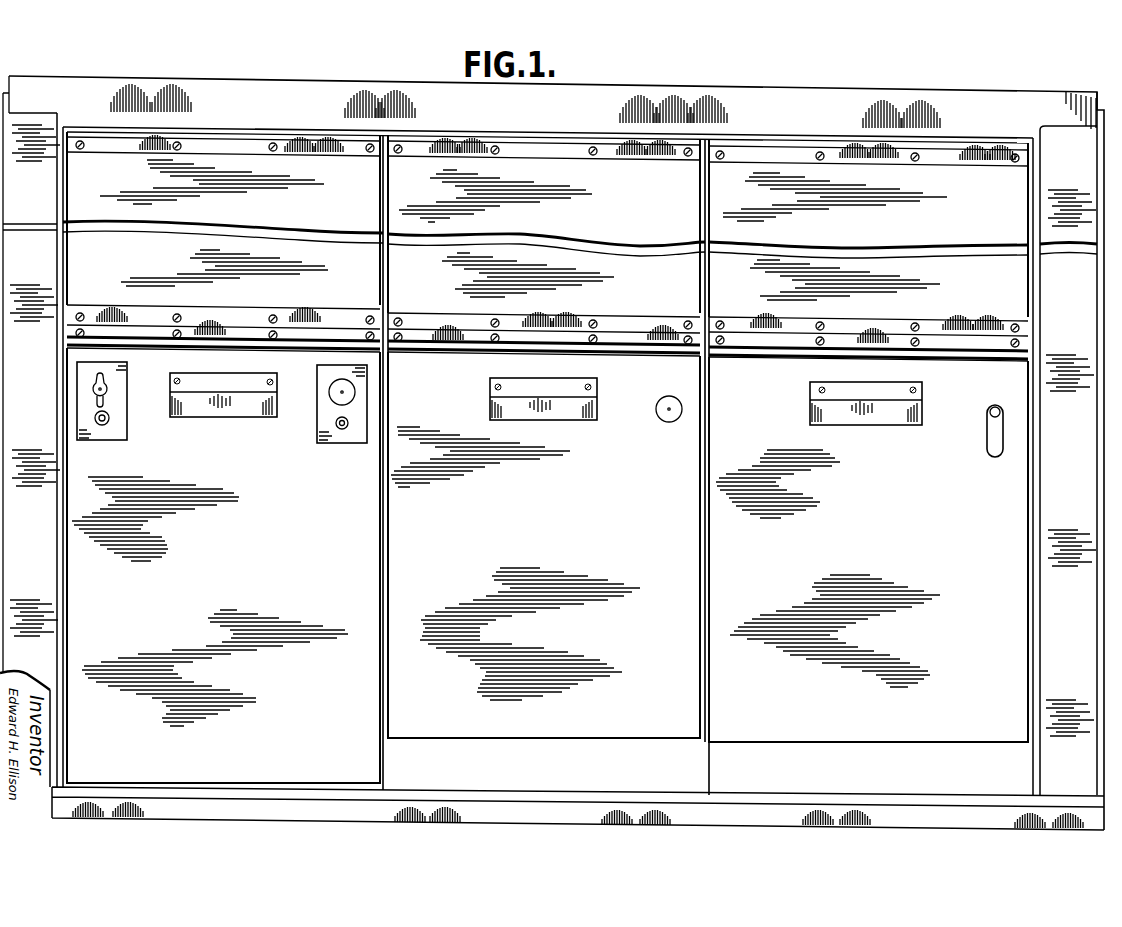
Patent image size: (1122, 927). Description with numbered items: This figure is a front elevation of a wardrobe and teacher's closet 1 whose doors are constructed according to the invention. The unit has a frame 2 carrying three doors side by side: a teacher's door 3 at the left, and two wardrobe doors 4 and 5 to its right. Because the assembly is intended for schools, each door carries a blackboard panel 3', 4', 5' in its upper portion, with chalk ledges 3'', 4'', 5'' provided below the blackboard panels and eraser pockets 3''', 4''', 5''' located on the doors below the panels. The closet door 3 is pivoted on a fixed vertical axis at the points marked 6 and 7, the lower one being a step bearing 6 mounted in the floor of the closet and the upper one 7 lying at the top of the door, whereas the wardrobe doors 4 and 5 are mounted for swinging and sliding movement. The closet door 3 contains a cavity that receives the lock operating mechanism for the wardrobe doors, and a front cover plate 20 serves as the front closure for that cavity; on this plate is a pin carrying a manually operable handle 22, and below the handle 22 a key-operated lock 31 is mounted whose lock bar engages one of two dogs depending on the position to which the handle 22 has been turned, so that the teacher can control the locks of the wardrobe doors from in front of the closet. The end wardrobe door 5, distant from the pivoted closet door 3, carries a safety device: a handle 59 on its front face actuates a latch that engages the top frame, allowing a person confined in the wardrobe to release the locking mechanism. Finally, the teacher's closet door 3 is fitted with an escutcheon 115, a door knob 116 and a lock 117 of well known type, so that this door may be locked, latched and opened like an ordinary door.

The wardrobe and teacher's closet 1 is at (388, 90).
The frame 2 is at (688, 110).
The teacher's door 3 is at (223, 599).
The blackboard panel 3' is at (223, 179).
The chalk ledge 3'' is at (223, 346).
The eraser pocket 3''' is at (223, 415).
The wardrobe door 4 is at (544, 602).
The blackboard panel 4' is at (544, 183).
The chalk ledge 4'' is at (544, 348).
The eraser pocket 4''' is at (543, 417).
The wardrobe door 5 is at (868, 605).
The blackboard panel 5' is at (868, 185).
The chalk ledge 5'' is at (868, 350).
The eraser pocket 5''' is at (866, 420).
The step bearing 6 is at (95, 785).
The upper pivot 7 is at (95, 128).
The front cover plate 20 is at (125, 418).
The handle 22 is at (105, 380).
The lock 31 is at (105, 421).
The handle 59 is at (993, 447).
The escutcheon 115 is at (320, 425).
The door knob 116 is at (340, 392).
The lock 117 is at (344, 428).